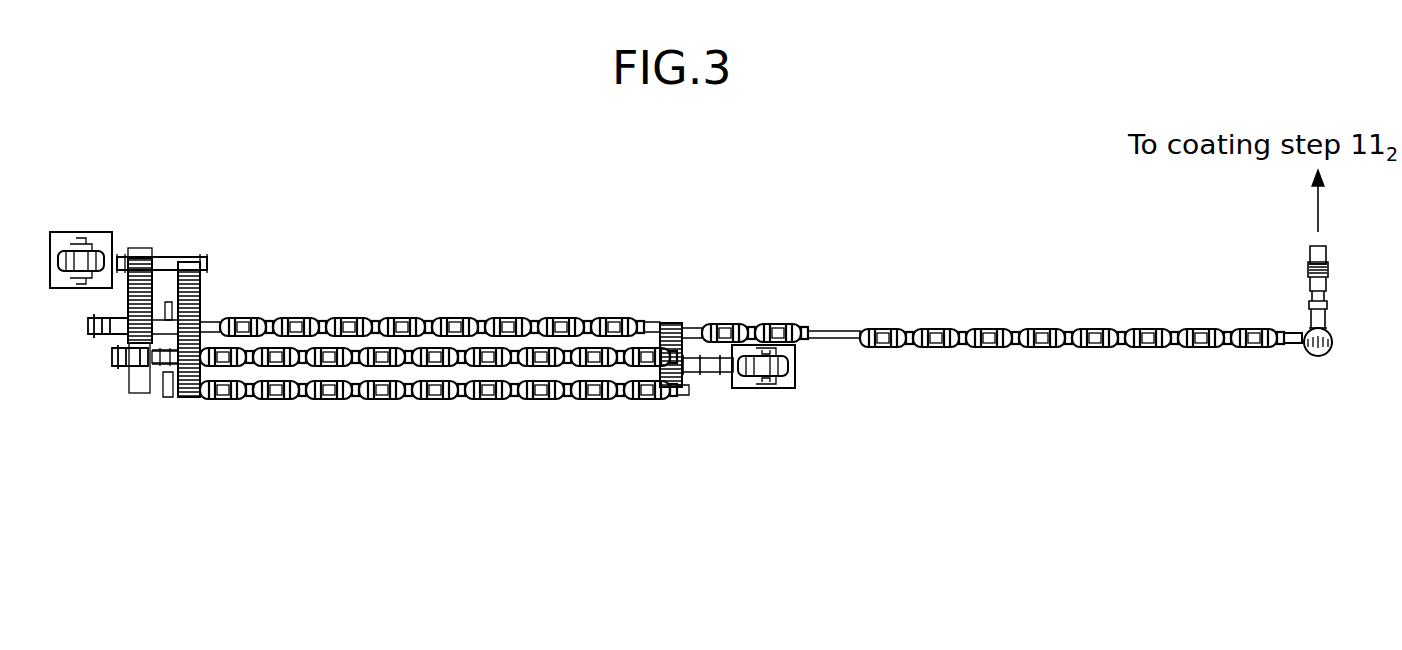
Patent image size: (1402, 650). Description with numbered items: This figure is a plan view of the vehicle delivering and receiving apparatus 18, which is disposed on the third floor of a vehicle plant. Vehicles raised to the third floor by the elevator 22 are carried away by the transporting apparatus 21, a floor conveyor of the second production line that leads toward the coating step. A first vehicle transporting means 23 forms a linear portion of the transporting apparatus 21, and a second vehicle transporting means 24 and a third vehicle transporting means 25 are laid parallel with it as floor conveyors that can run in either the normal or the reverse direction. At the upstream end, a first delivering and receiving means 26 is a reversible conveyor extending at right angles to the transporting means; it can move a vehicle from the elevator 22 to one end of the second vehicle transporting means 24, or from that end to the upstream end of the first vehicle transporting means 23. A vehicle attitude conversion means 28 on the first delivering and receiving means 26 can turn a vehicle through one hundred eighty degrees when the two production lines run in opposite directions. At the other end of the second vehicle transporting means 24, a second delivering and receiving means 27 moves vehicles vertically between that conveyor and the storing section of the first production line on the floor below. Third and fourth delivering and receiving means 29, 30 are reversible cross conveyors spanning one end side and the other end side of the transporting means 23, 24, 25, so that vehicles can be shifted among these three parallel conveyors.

The vehicle delivering and receiving apparatus 18 is at (499, 309).
The transporting apparatus 21 is at (838, 324).
The elevator 22 is at (97, 243).
The first vehicle transporting means 23 is at (213, 317).
The second vehicle transporting means 24 is at (480, 402).
The third vehicle transporting means 25 is at (585, 402).
The first delivering and receiving means 26 is at (150, 300).
The second delivering and receiving means 27 is at (776, 390).
The vehicle attitude conversion means 28 is at (123, 362).
The third delivering and receiving means 29 is at (213, 310).
The fourth delivering and receiving means 30 is at (688, 330).